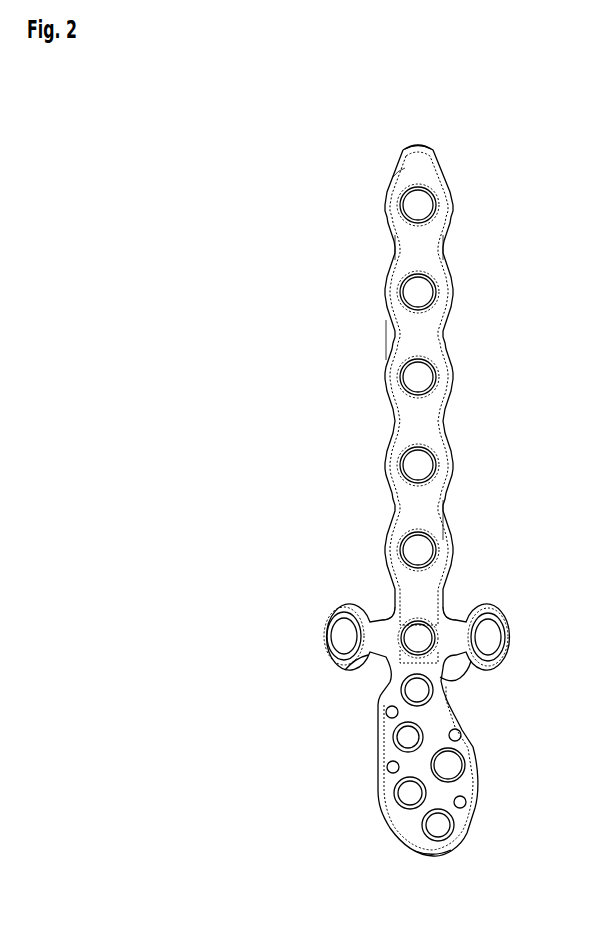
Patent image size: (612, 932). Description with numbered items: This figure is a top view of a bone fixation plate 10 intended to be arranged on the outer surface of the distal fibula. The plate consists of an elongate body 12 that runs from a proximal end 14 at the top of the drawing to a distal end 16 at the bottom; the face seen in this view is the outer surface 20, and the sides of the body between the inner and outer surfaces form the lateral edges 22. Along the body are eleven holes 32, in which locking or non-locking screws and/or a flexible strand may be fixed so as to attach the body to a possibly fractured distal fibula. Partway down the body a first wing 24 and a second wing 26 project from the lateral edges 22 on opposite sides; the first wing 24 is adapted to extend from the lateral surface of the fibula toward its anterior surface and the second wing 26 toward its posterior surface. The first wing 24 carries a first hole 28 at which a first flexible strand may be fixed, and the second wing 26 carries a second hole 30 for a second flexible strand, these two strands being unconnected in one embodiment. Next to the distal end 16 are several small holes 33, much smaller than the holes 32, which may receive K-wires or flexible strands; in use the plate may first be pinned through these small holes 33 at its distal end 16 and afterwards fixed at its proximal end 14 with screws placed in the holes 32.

The bone fixation plate 10 is at (494, 148).
The elongate body 12 is at (398, 180).
The proximal end 14 is at (418, 148).
The distal end 16 is at (433, 857).
The outer surface 20 is at (420, 250).
The lateral edges 22 is at (392, 350).
The first wing 24 is at (375, 614).
The second wing 26 is at (477, 666).
The first hole 28 is at (345, 637).
The second hole 30 is at (487, 637).
The holes 32 is at (407, 206).
The small holes 33 is at (392, 712).